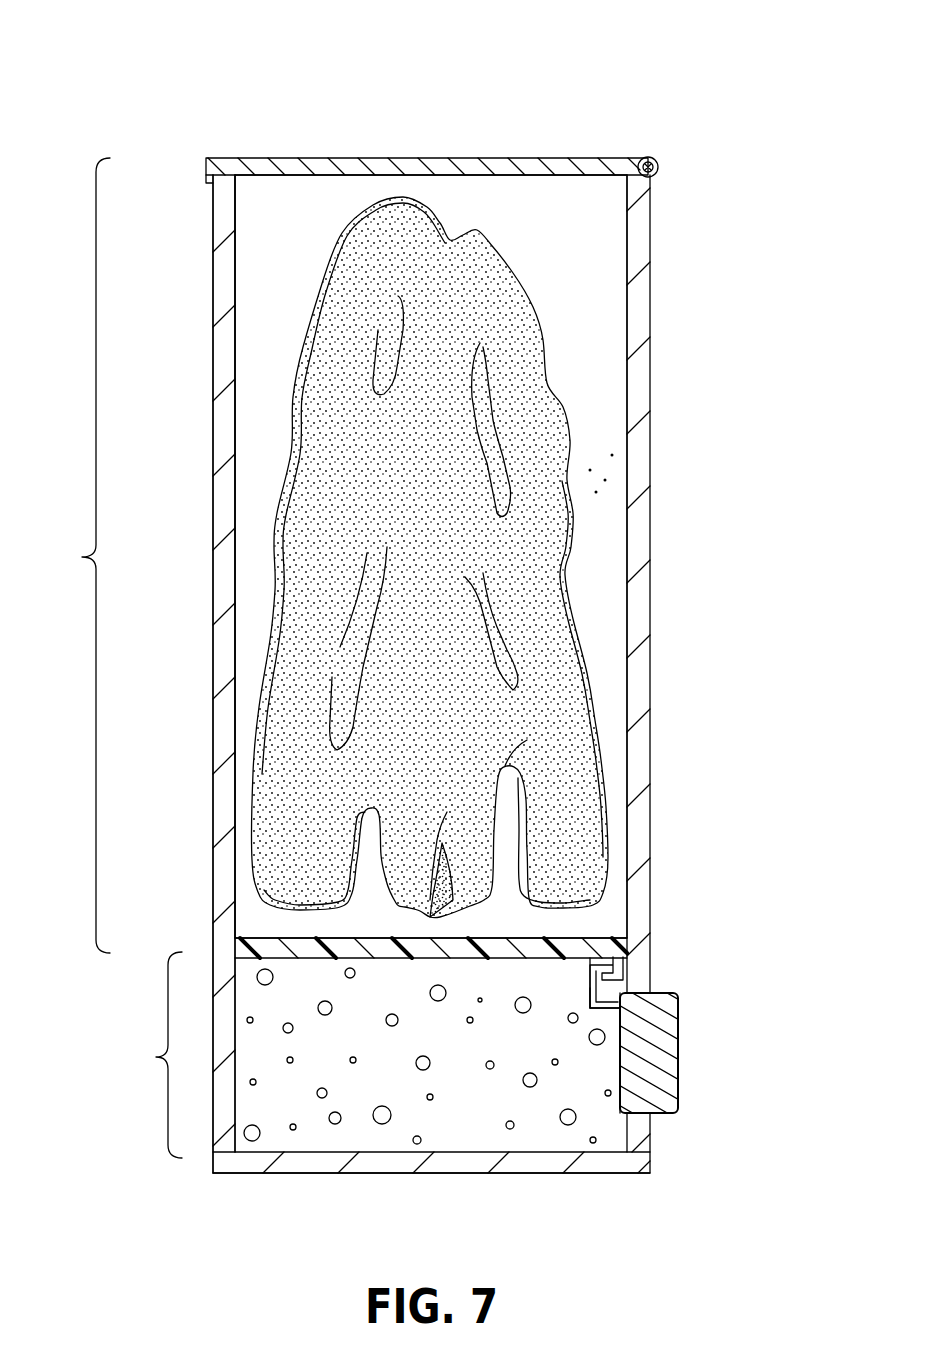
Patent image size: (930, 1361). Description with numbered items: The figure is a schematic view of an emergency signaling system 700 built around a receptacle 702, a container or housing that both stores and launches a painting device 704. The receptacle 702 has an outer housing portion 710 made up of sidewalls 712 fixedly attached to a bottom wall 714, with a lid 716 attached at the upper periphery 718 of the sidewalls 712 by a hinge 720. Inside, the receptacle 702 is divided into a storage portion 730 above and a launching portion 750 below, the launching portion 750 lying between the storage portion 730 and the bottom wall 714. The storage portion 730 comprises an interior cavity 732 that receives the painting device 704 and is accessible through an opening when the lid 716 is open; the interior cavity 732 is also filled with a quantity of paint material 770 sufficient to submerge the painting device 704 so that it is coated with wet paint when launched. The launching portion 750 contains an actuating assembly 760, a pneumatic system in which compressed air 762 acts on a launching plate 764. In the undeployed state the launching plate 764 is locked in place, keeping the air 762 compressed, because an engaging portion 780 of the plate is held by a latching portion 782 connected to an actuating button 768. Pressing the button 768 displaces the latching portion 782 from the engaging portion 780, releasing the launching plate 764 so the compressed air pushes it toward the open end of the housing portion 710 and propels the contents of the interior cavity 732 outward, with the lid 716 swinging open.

The emergency signaling system 700 is at (549, 86).
The receptacle 702 is at (442, 715).
The painting device 704 is at (548, 512).
The outer housing portion 710 is at (213, 510).
The sidewalls 712 is at (225, 660).
The bottom wall 714 is at (450, 1176).
The lid 716 is at (405, 157).
The upper periphery 718 is at (212, 183).
The hinge 720 is at (660, 168).
The storage portion 730 is at (385, 555).
The interior cavity 732 is at (585, 335).
The launching portion 750 is at (361, 1093).
The actuating assembly 760 is at (687, 1088).
The compressed air 762 is at (383, 1124).
The launching plate 764 is at (573, 943).
The actuating button 768 is at (680, 1060).
The paint material 770 is at (598, 465).
The engaging portion 780 is at (620, 960).
The latching portion 782 is at (590, 988).